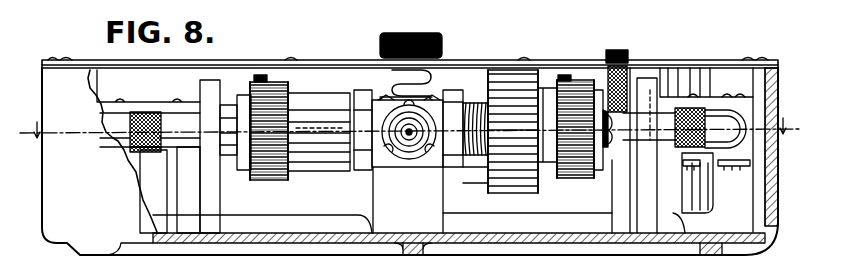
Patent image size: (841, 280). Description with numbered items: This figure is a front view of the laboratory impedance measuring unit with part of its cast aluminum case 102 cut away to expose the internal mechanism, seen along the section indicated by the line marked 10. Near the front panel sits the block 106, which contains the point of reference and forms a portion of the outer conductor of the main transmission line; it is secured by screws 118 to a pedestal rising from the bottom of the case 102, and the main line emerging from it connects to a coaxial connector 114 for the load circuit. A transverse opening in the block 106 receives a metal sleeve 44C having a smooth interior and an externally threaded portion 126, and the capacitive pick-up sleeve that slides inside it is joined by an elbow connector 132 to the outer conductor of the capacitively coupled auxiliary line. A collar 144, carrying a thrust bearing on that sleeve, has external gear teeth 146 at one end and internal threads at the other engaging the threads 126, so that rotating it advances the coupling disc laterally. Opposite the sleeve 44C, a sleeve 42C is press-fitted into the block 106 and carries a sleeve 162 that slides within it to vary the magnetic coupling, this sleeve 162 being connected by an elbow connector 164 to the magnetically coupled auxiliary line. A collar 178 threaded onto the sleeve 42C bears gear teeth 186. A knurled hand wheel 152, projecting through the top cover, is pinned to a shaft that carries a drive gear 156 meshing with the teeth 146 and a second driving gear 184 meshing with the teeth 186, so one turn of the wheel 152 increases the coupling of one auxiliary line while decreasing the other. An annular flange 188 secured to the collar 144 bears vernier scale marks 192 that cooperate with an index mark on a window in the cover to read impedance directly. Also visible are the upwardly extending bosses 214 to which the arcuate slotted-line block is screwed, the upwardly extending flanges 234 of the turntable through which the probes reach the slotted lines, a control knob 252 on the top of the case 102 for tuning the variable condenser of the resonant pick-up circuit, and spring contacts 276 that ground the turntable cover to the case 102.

The section line 10 is at (413, 123).
The case 102 is at (50, 240).
The block 106 is at (447, 98).
The coaxial connector 114 is at (408, 140).
The screws 118 is at (431, 99).
The threaded portion 126 is at (474, 106).
The elbow connector 132 is at (727, 135).
The collar 144 is at (572, 78).
The gear teeth 146 is at (578, 180).
The knurled hand wheel 152 is at (626, 53).
The drive gear 156 is at (575, 90).
The sleeve 162 is at (214, 150).
The elbow connector 164 is at (116, 140).
The collar 178 is at (347, 170).
The second driving gear 184 is at (259, 74).
The gear teeth 186 is at (281, 180).
The annular flange 188 is at (485, 183).
The vernier scale marks 192 is at (528, 72).
The bosses 214 is at (153, 205).
The sides or flanges 234 is at (708, 202).
The control knob 252 is at (380, 47).
The spring contacts 276 is at (394, 85).
The sleeve 42C is at (363, 110).
The metal sleeve 44C is at (455, 155).